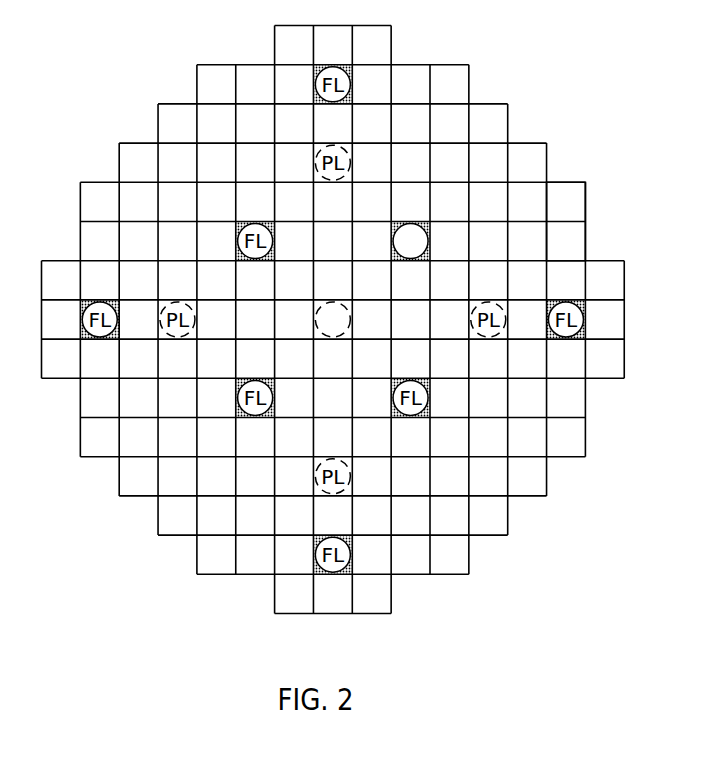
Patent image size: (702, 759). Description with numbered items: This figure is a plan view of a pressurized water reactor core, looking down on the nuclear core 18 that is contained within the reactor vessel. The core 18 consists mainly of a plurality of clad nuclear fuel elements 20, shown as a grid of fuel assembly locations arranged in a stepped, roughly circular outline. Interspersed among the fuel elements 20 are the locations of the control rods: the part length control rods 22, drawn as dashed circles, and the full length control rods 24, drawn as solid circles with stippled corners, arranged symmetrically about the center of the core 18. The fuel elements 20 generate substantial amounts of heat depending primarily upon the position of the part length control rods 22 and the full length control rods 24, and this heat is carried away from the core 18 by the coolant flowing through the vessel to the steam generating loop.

The nuclear core 18 is at (592, 499).
The clad nuclear fuel elements 20 is at (579, 210).
The part length control rods 22 is at (349, 316).
The full length control rods 24 is at (428, 240).